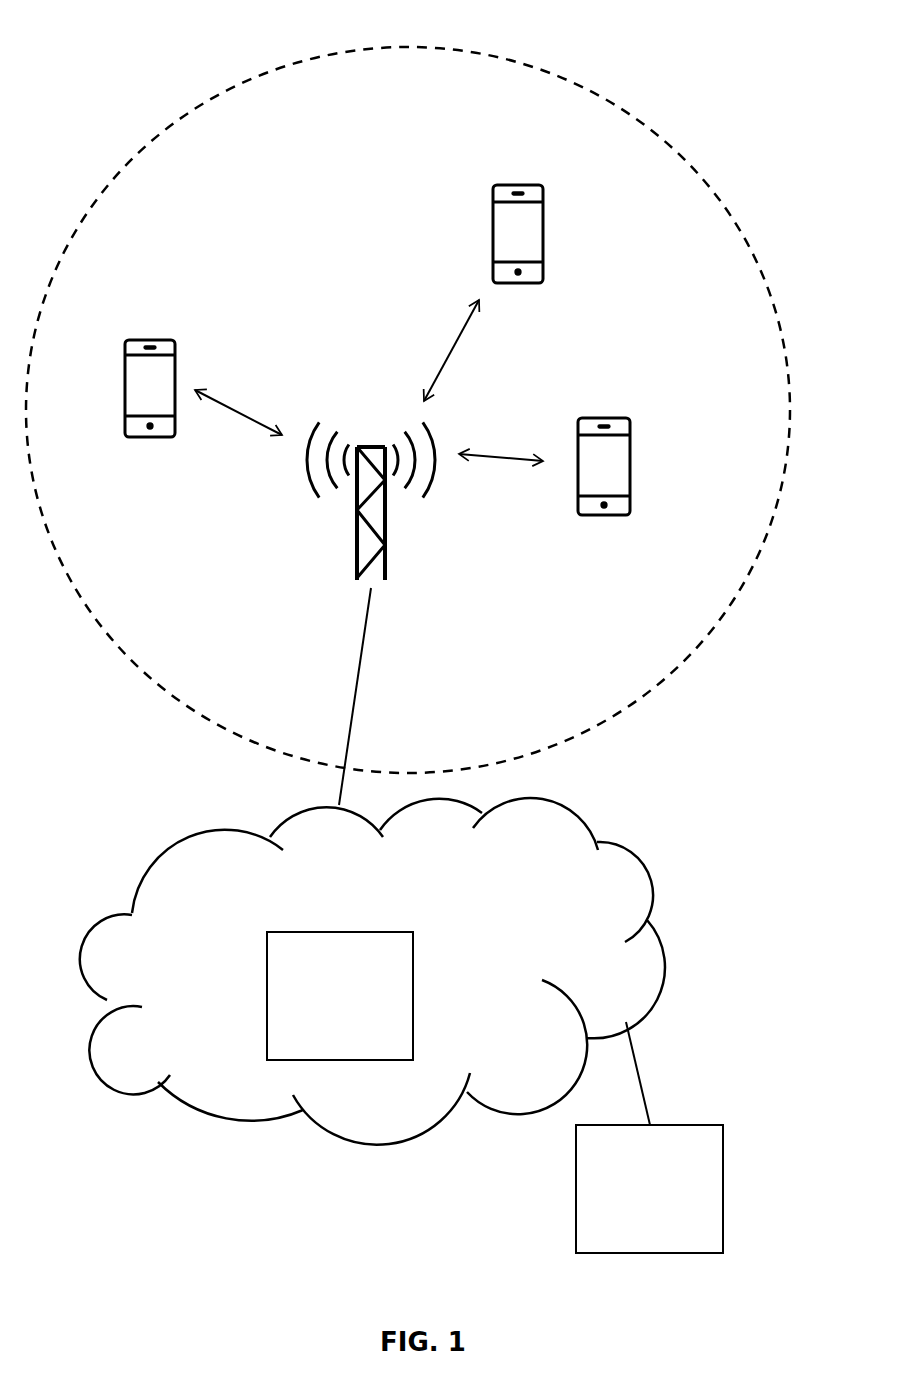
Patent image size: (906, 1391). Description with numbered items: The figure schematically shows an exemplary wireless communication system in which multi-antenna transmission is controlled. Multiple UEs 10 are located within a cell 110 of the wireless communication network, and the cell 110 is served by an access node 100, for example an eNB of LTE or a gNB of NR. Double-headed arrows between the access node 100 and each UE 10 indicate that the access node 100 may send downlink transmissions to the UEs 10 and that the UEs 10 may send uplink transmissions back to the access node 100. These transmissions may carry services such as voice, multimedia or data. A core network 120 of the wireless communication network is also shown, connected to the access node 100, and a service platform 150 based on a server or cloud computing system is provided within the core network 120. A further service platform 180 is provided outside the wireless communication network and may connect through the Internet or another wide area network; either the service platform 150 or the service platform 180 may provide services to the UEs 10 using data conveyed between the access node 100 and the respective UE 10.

The UE 10 is at (152, 437).
The access node 100 is at (355, 556).
The cell 110 is at (525, 63).
The core network 120 is at (665, 970).
The service platform 150 is at (267, 992).
The service platform 180 is at (725, 1192).